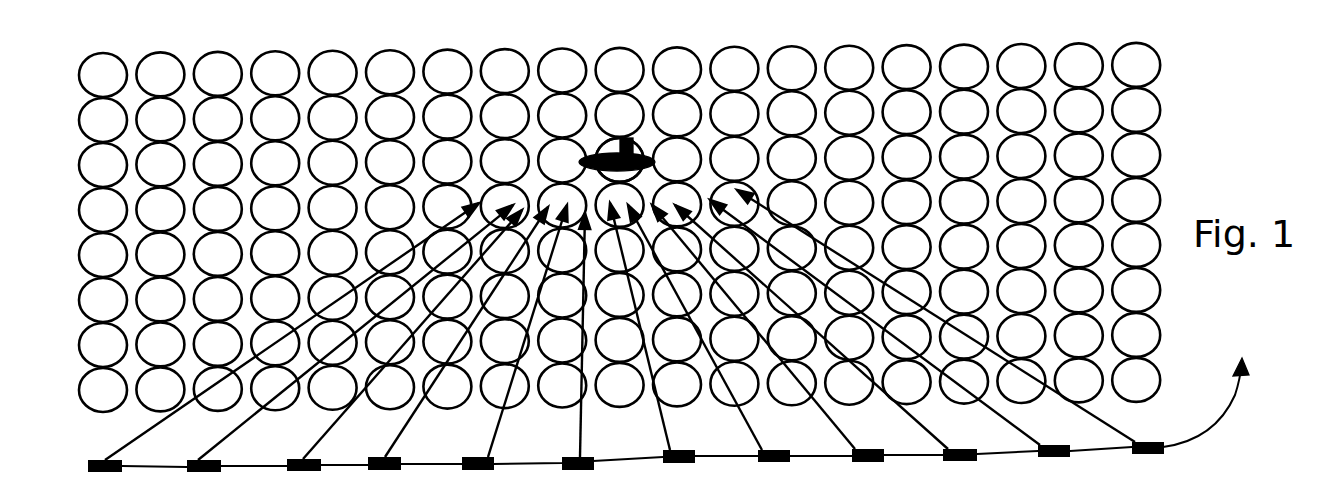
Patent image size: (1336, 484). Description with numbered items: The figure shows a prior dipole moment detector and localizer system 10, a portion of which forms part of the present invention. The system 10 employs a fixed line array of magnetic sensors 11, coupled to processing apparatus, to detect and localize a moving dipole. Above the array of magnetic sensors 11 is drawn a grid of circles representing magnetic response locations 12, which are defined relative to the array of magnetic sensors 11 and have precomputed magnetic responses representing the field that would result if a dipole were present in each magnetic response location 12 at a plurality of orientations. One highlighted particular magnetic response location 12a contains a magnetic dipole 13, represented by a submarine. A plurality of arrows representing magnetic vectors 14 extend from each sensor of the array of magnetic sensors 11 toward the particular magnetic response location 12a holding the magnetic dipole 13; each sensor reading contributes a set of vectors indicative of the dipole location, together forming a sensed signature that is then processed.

The dipole moment detector and localizer system 10 is at (1228, 307).
The array of magnetic sensors 11 is at (1066, 457).
The magnetic response locations 12 is at (1148, 148).
The particular magnetic response location 12a is at (606, 145).
The magnetic dipole 13 is at (653, 160).
The magnetic vectors 14 is at (665, 427).